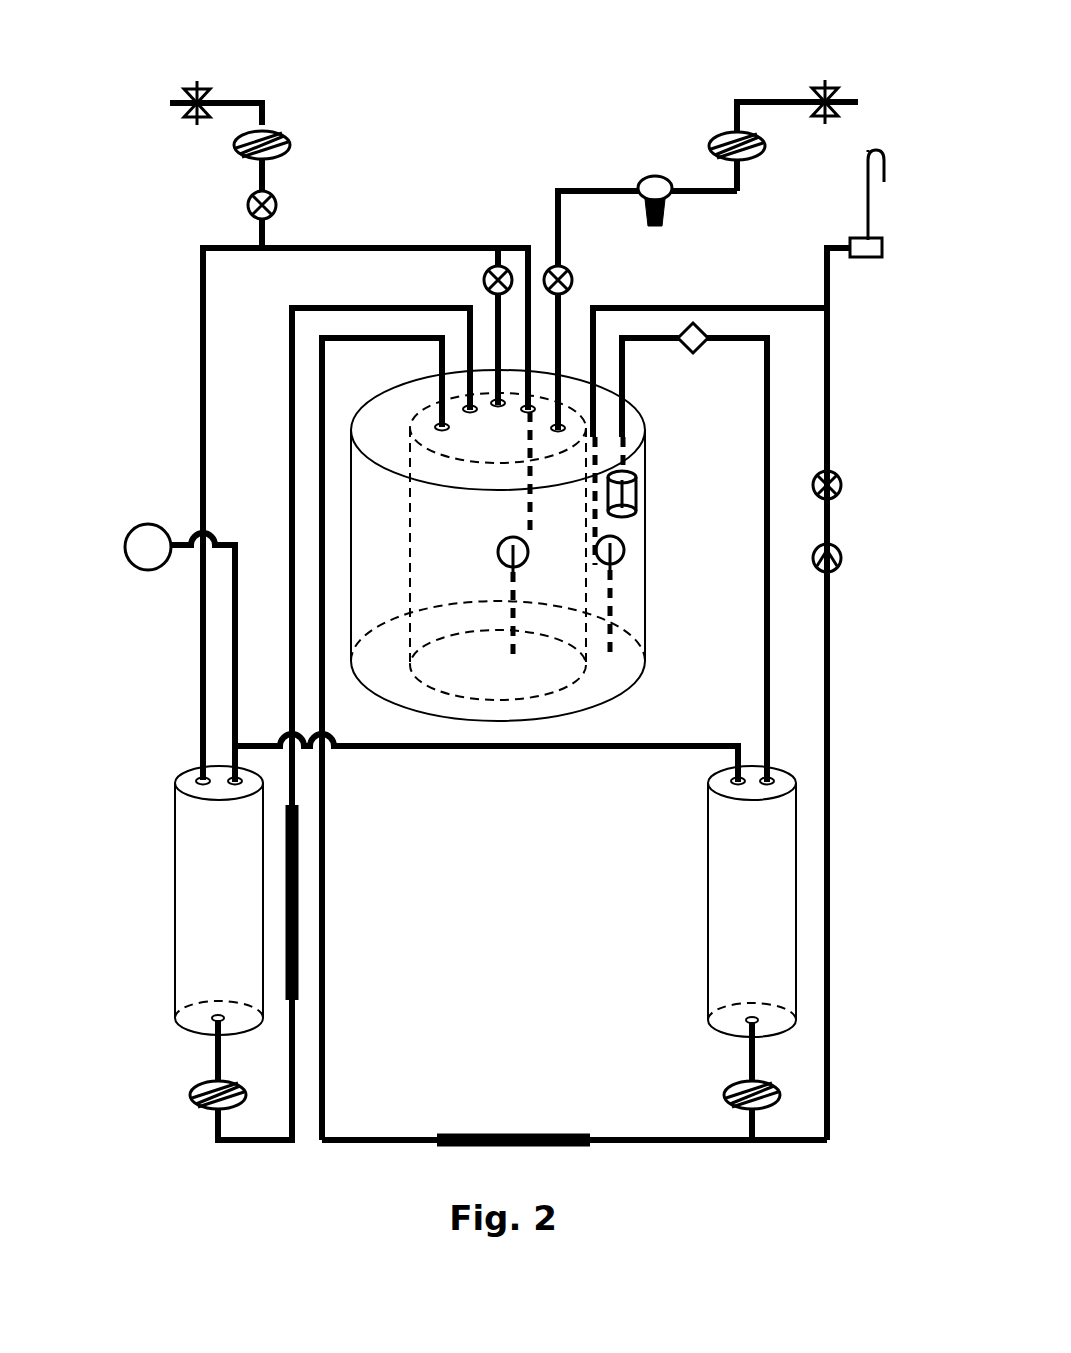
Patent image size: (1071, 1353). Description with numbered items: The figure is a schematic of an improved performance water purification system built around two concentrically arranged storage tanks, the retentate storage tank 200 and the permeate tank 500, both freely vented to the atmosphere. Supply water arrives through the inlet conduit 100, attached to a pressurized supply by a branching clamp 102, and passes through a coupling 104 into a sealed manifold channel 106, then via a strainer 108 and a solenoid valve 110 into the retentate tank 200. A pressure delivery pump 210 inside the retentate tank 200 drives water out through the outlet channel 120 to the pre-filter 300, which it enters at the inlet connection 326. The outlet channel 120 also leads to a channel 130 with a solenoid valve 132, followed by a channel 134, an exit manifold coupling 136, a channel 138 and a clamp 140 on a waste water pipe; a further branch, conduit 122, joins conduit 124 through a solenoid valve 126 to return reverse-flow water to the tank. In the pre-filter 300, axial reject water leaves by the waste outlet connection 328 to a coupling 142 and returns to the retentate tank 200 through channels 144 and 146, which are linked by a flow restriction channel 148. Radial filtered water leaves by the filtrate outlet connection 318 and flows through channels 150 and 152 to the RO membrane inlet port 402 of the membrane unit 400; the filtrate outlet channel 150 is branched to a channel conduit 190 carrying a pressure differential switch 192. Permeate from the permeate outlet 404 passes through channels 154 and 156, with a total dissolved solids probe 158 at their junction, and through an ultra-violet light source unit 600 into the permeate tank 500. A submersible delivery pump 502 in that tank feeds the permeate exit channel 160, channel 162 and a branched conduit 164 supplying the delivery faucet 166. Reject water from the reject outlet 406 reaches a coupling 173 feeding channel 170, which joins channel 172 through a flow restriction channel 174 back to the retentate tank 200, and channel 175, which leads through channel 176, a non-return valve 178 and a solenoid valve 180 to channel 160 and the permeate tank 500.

The inlet conduit 100 is at (780, 100).
The branching clamp 102 is at (830, 92).
The coupling 104 is at (720, 130).
The sealed manifold channel 106 is at (712, 187).
The strainer 108 is at (660, 185).
The solenoid valve 110 is at (553, 305).
The outlet channel 120 is at (200, 265).
The conduit 122 is at (494, 260).
The conduit 124 is at (495, 353).
The solenoid valve 126 is at (485, 272).
The channel 130 is at (265, 238).
The solenoid valve 132 is at (248, 205).
The channel 134 is at (258, 178).
The exit manifold coupling 136 is at (240, 145).
The channel 138 is at (265, 103).
The clamp 140 is at (194, 90).
The coupling 142 is at (196, 1088).
The channel 144 is at (290, 1058).
The channel 146 is at (288, 432).
The flow restriction channel 148 is at (300, 950).
The filtrate outlet channel 150 is at (242, 750).
The channel 152 is at (430, 748).
The channel 154 is at (770, 710).
The channel 156 is at (628, 355).
The total dissolved solids probe 158 is at (703, 328).
The permeate exit channel 160 is at (780, 313).
The channel 162 is at (830, 280).
The branched conduit 164 is at (840, 245).
The delivery faucet 166 is at (862, 170).
The channel 170 is at (690, 1135).
The channel 172 is at (327, 1112).
The coupling 173 is at (774, 1090).
The flow restriction channel 174 is at (575, 1135).
The channel 175 is at (830, 710).
The channel 176 is at (832, 522).
The non-return valve 178 is at (838, 567).
The solenoid valve 180 is at (834, 476).
The channel conduit 190 is at (232, 657).
The pressure differential switch 192 is at (146, 542).
The retentate storage tank 200 is at (533, 686).
The pressure delivery pump 210 is at (500, 540).
The pre-filter 300 is at (205, 905).
The filtrate outlet connection 318 is at (203, 765).
The inlet connection 326 is at (182, 777).
The waste outlet connection 328 is at (214, 1015).
The membrane unit 400 is at (780, 930).
The RO membrane inlet port 402 is at (735, 790).
The permeate outlet 404 is at (772, 790).
The reject outlet 406 is at (756, 1018).
The permeate tank 500 is at (640, 622).
The submersible delivery pump 502 is at (627, 548).
The ultra-violet light source unit 600 is at (635, 470).